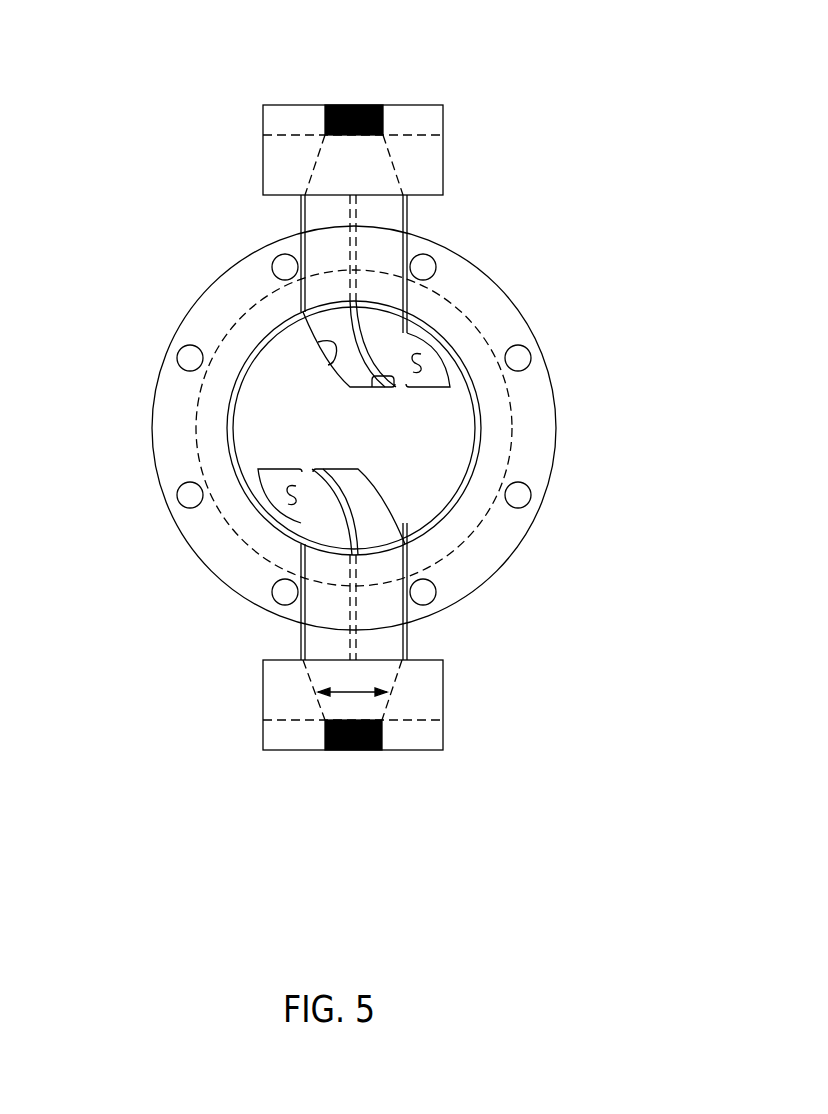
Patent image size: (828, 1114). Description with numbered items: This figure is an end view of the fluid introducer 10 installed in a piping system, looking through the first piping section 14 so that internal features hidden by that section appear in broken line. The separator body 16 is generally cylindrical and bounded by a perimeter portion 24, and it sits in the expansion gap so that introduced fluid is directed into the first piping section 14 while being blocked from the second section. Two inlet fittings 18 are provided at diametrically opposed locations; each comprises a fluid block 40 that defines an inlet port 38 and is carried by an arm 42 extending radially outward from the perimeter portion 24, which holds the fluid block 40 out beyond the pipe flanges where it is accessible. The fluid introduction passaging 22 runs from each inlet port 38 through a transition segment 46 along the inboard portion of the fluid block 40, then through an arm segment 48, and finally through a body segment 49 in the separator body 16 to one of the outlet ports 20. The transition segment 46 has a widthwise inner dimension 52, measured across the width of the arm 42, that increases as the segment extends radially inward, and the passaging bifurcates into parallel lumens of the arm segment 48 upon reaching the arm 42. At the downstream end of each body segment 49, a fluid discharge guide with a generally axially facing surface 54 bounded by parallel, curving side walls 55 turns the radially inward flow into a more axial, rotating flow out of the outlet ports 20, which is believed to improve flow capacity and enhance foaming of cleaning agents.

The fluid introducer 10 is at (540, 207).
The first piping section 14 is at (477, 393).
The separator body 16 is at (280, 368).
The inlet fittings 18 is at (328, 104).
The outlet ports 20 is at (417, 365).
The fluid introduction passaging 22 is at (390, 573).
The perimeter portion 24 is at (508, 393).
The inlet port 38 is at (352, 105).
The fluid block 40 is at (425, 120).
The arm 42 is at (407, 213).
The transition segment 46 is at (308, 680).
The arm segment 48 is at (328, 268).
The body segment 49 is at (387, 267).
The widthwise inner dimension 52 is at (355, 695).
The generally axially facing surface 54 is at (357, 390).
The side walls 55 is at (333, 352).